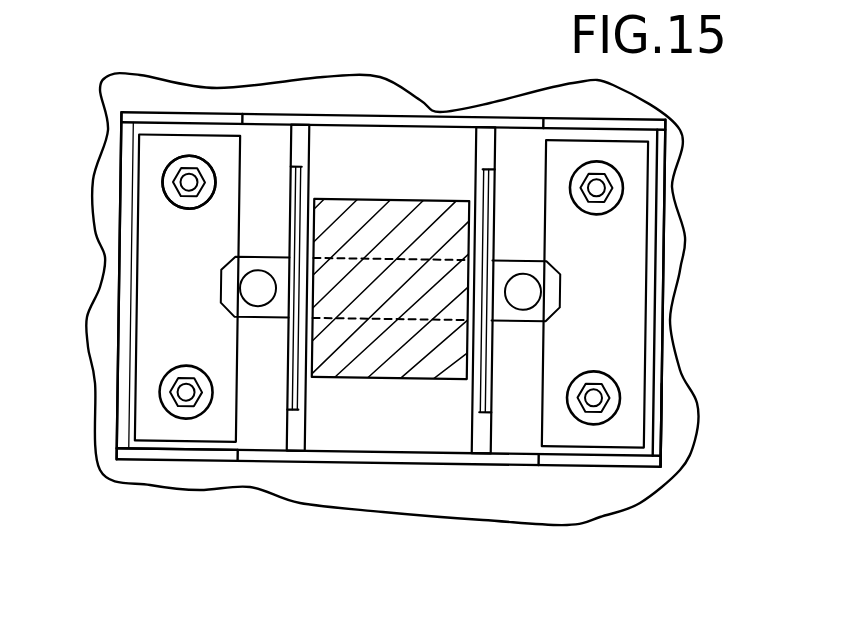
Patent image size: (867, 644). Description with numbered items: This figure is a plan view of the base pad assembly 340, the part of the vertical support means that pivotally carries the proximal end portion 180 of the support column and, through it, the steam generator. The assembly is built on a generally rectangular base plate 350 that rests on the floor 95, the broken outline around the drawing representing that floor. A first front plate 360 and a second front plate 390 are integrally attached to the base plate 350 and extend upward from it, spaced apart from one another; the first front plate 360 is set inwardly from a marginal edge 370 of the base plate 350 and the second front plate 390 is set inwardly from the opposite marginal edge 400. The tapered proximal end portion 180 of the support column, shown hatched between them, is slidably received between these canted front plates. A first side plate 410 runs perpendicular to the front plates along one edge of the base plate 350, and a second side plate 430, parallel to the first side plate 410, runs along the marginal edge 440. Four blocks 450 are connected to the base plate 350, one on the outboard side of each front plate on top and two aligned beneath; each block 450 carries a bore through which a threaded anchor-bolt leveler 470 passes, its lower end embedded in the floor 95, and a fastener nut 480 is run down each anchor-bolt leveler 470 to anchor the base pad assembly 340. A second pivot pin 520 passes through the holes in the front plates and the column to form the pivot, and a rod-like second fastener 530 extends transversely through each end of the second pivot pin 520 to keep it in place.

The floor 95 is at (533, 512).
The proximal end portion 180 is at (362, 364).
The base pad assembly 340 is at (337, 522).
The base plate 350 is at (653, 317).
The first front plate 360 is at (307, 417).
The marginal edge 370 is at (118, 372).
The second front plate 390 is at (474, 417).
The marginal edge 400 is at (665, 397).
The first side plate 410 is at (417, 457).
The second side plate 430 is at (433, 113).
The marginal edge 440 is at (252, 462).
The block 450 is at (148, 243).
The anchor-bolt leveler 470 is at (174, 184).
The fastener nut 480 is at (168, 168).
The second pivot pin 520 is at (238, 262).
The second fastener 530 is at (253, 300).